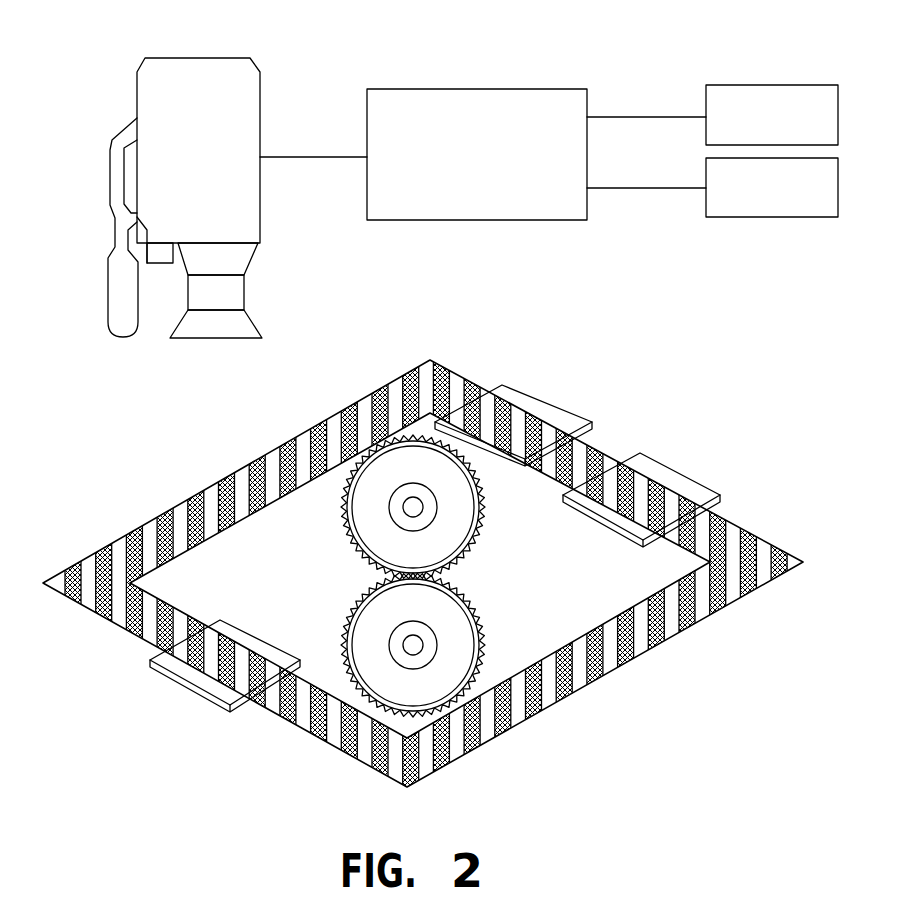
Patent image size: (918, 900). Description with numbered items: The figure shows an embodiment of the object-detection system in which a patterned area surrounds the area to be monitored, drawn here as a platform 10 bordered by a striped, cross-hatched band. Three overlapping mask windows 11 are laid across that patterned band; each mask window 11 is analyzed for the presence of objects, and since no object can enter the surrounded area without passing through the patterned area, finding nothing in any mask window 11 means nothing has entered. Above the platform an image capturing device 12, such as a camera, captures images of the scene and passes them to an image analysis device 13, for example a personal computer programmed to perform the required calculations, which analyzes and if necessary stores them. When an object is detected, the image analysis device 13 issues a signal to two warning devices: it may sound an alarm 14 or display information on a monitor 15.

The wafer transfer platform 10 is at (234, 473).
The mask window 11 is at (562, 402).
The image capturing device 12 is at (200, 58).
The image analysis device 13 is at (478, 89).
The alarm 14 is at (775, 85).
The monitor 15 is at (775, 217).